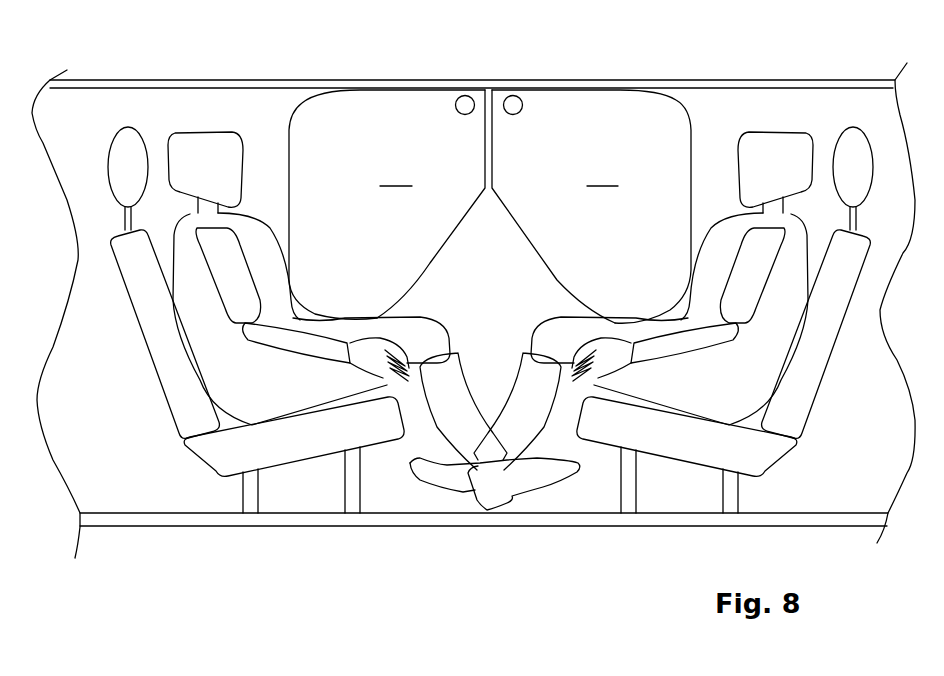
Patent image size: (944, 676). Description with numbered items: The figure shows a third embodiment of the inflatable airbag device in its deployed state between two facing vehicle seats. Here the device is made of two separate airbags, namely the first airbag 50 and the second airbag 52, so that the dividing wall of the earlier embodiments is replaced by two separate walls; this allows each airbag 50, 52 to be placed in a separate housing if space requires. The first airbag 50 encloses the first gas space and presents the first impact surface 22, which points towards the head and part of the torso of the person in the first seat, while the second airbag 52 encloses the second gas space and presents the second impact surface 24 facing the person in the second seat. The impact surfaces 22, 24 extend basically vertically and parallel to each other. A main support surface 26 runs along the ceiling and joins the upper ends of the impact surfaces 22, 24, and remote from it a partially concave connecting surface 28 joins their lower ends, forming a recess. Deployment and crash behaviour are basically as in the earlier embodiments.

The first impact surface 22 is at (683, 171).
The second impact surface 24 is at (292, 164).
The main support surface 26 is at (547, 90).
The connecting surface 28 is at (557, 280).
The first airbag 50 is at (688, 107).
The second airbag 52 is at (302, 103).